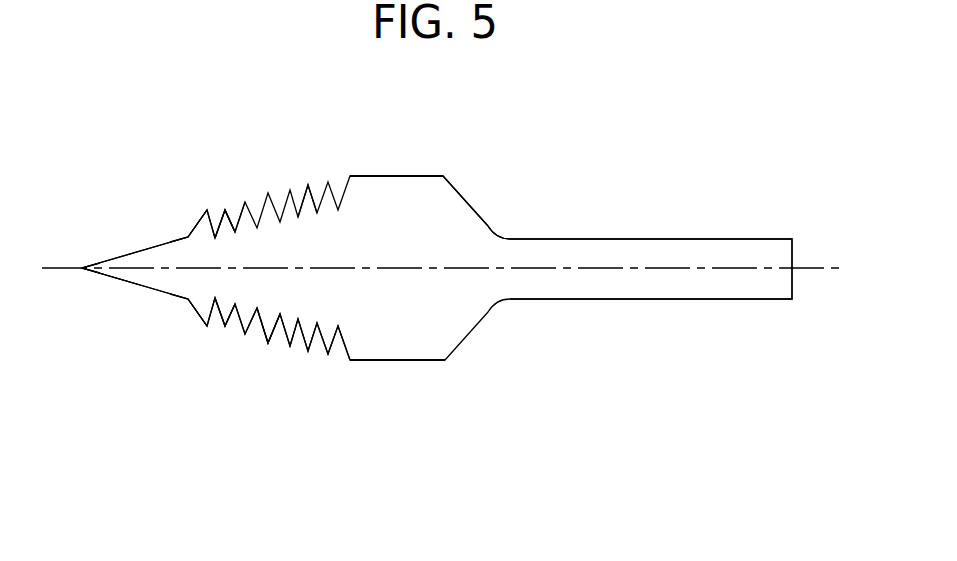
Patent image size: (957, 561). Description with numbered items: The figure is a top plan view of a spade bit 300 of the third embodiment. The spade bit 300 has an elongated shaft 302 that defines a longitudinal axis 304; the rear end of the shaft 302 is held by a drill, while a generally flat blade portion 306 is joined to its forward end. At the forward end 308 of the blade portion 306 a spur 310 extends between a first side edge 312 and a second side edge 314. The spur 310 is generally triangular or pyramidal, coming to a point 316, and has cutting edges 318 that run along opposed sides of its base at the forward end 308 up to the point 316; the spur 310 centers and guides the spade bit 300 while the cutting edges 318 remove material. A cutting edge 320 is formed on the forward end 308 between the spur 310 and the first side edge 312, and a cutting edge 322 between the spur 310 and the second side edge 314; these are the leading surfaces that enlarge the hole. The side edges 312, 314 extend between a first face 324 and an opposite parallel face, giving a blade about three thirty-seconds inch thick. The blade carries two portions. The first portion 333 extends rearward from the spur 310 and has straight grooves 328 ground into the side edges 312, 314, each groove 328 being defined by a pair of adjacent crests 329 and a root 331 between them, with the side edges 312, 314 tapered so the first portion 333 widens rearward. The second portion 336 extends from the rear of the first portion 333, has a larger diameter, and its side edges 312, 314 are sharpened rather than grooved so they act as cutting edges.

The spade bit 300 is at (540, 198).
The elongated shaft 302 is at (682, 248).
The longitudinal axis 304 is at (745, 268).
The blade portion 306 is at (407, 198).
The forward end of the blade portion 308 is at (187, 236).
The spur 310 is at (118, 280).
The first side edge 312 is at (231, 212).
The second side edge 314 is at (227, 329).
The point 316 is at (82, 268).
The cutting edges 318 is at (121, 257).
The cutting edge 320 is at (187, 236).
The cutting edge 322 is at (187, 298).
The first face 324 is at (370, 248).
The grooves 328 is at (238, 208).
The crests 329 is at (310, 193).
The root 331 is at (230, 221).
The first portion 333 is at (182, 410).
The second portion 336 is at (352, 410).